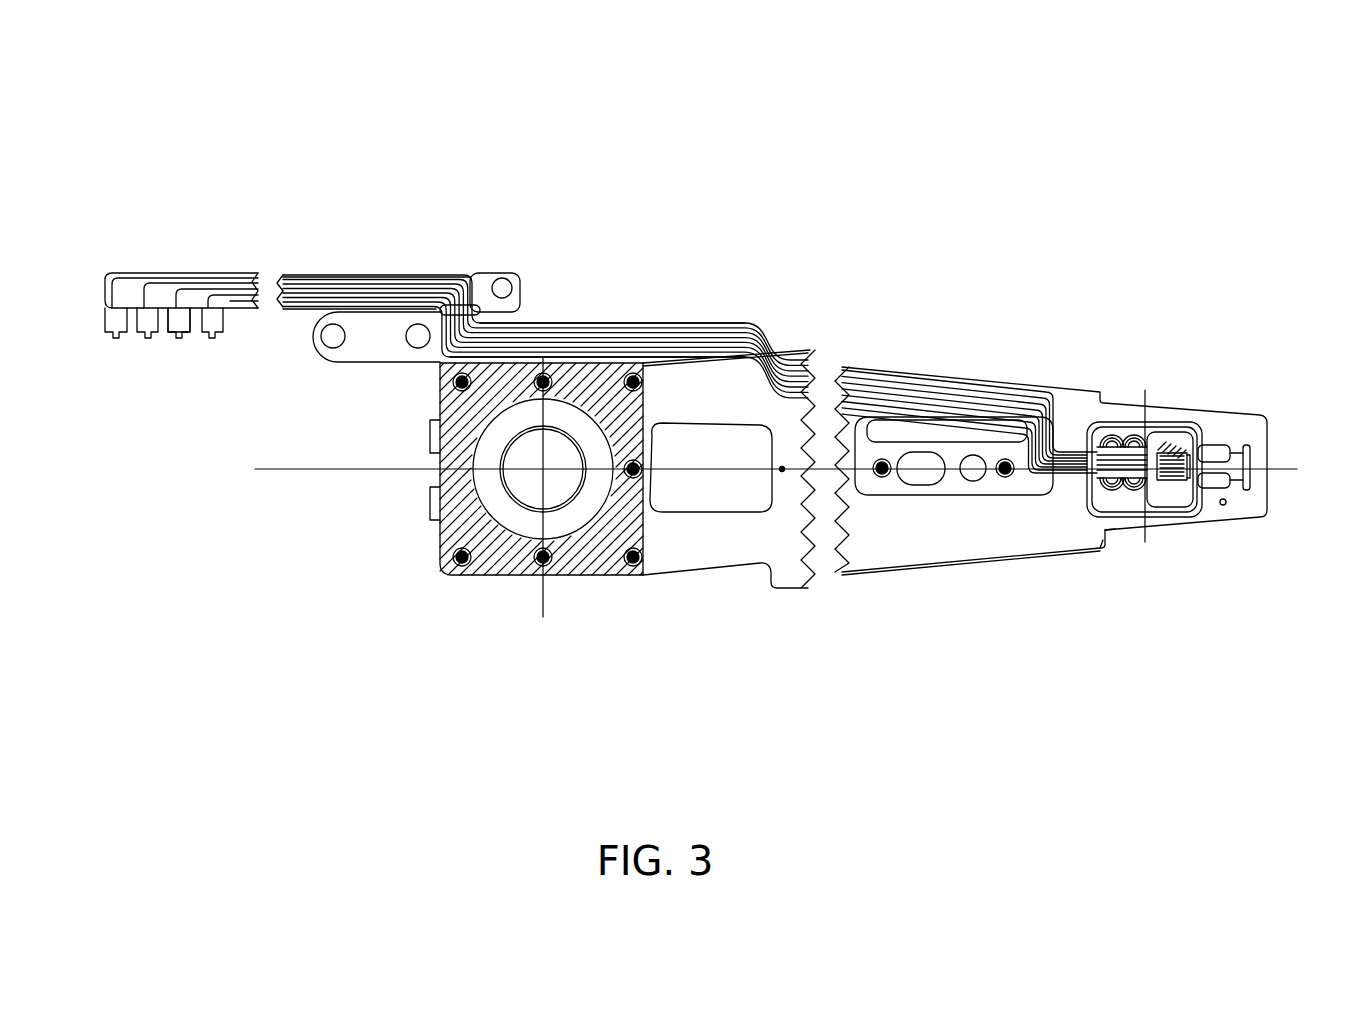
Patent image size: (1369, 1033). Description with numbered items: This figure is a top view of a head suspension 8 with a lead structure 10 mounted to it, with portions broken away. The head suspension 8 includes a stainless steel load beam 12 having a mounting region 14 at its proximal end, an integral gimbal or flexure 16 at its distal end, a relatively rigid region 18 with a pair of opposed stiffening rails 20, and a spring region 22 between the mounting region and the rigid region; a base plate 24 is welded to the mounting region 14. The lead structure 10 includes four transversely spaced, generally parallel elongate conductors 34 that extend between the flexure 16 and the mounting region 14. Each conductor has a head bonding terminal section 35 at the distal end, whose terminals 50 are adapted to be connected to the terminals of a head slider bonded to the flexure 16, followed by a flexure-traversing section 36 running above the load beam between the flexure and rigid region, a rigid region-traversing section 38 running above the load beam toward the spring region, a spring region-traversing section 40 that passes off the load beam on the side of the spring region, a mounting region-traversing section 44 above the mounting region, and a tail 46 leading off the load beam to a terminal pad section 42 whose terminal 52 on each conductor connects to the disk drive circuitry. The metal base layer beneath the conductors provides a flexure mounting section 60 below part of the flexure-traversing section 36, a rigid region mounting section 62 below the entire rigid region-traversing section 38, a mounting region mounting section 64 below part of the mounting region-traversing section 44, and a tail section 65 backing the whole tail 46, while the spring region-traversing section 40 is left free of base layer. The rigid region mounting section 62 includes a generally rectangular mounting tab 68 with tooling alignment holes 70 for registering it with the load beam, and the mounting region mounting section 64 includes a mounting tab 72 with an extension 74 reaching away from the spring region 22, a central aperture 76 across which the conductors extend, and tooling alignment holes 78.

The head suspension 8 is at (984, 623).
The lead structure 10 is at (670, 266).
The load beam 12 is at (867, 580).
The mounting region 14 is at (462, 560).
The flexure 16 is at (1130, 480).
The rigid region 18 is at (1017, 480).
The stiffening rails 20 is at (1047, 380).
The spring region 22 is at (715, 540).
The base plate 24 is at (600, 558).
The conductors 34 is at (376, 273).
The head bonding terminal section 35 is at (1235, 415).
The flexure-traversing section 36 is at (1121, 395).
The rigid region-traversing section 38 is at (996, 360).
The spring region-traversing section 40 is at (771, 272).
The terminal pad section 42 is at (160, 388).
The mounting region-traversing section 44 is at (588, 258).
The tail 46 is at (229, 239).
The terminals 50 is at (1160, 420).
The terminal 52 is at (180, 335).
The flexure mounting section 60 is at (1188, 475).
The rigid region mounting section 62 is at (860, 400).
The mounting region mounting section 64 is at (510, 273).
The tail section 65 is at (318, 270).
The mounting tab 68 is at (1097, 548).
The tooling alignment holes 70 is at (973, 481).
The mounting tab 72 is at (430, 352).
The extension 74 is at (363, 352).
The central aperture 76 is at (542, 280).
The tooling alignment holes 78 is at (500, 275).